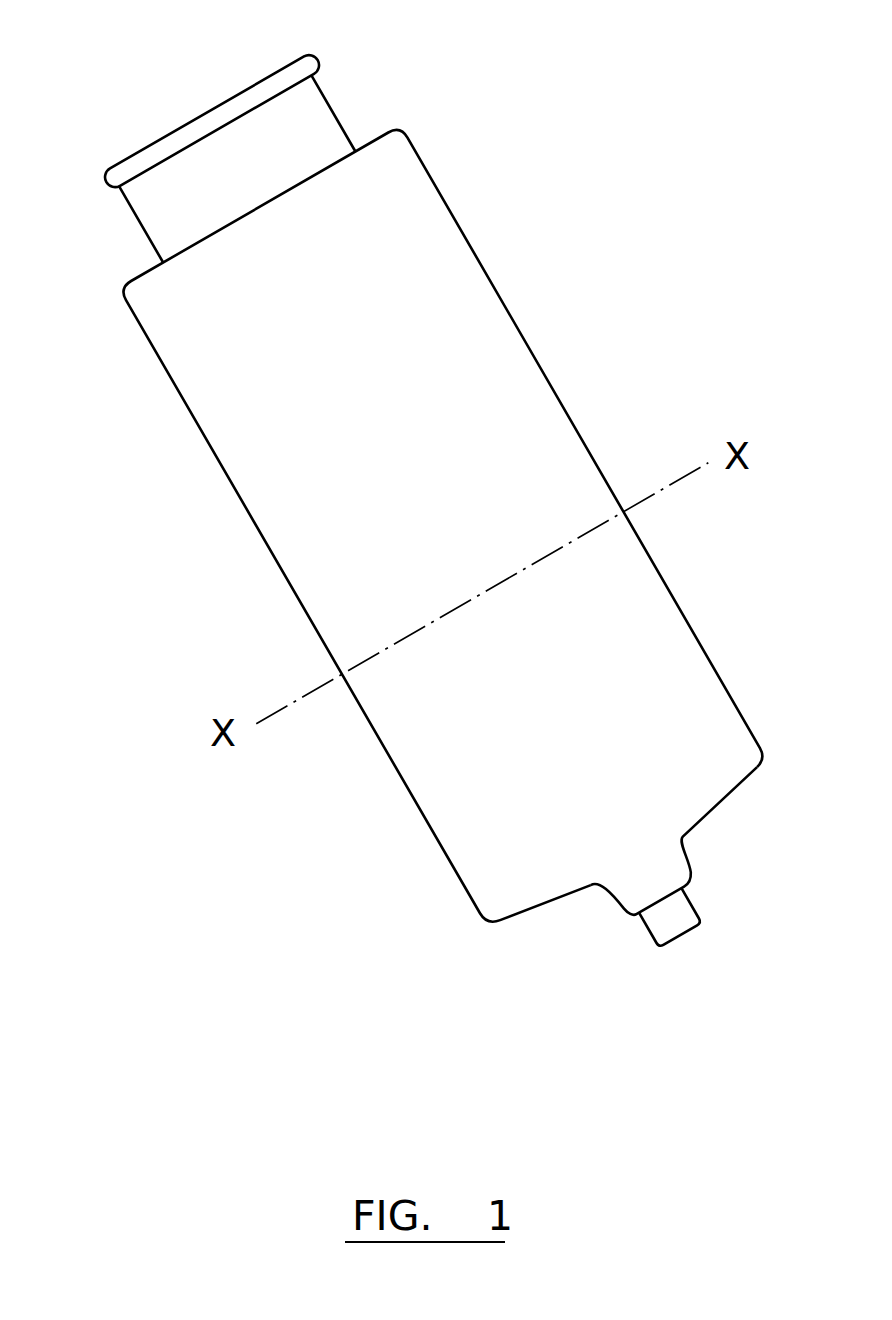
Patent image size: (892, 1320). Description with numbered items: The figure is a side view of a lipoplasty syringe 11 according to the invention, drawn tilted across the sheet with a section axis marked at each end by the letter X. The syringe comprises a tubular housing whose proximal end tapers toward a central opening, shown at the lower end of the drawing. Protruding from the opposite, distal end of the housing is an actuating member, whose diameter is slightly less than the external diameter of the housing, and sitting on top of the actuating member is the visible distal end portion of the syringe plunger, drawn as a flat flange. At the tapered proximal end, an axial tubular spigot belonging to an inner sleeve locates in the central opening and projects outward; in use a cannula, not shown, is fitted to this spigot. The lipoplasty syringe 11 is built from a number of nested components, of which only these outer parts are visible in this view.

The lipoplasty syringe 11 is at (446, 533).